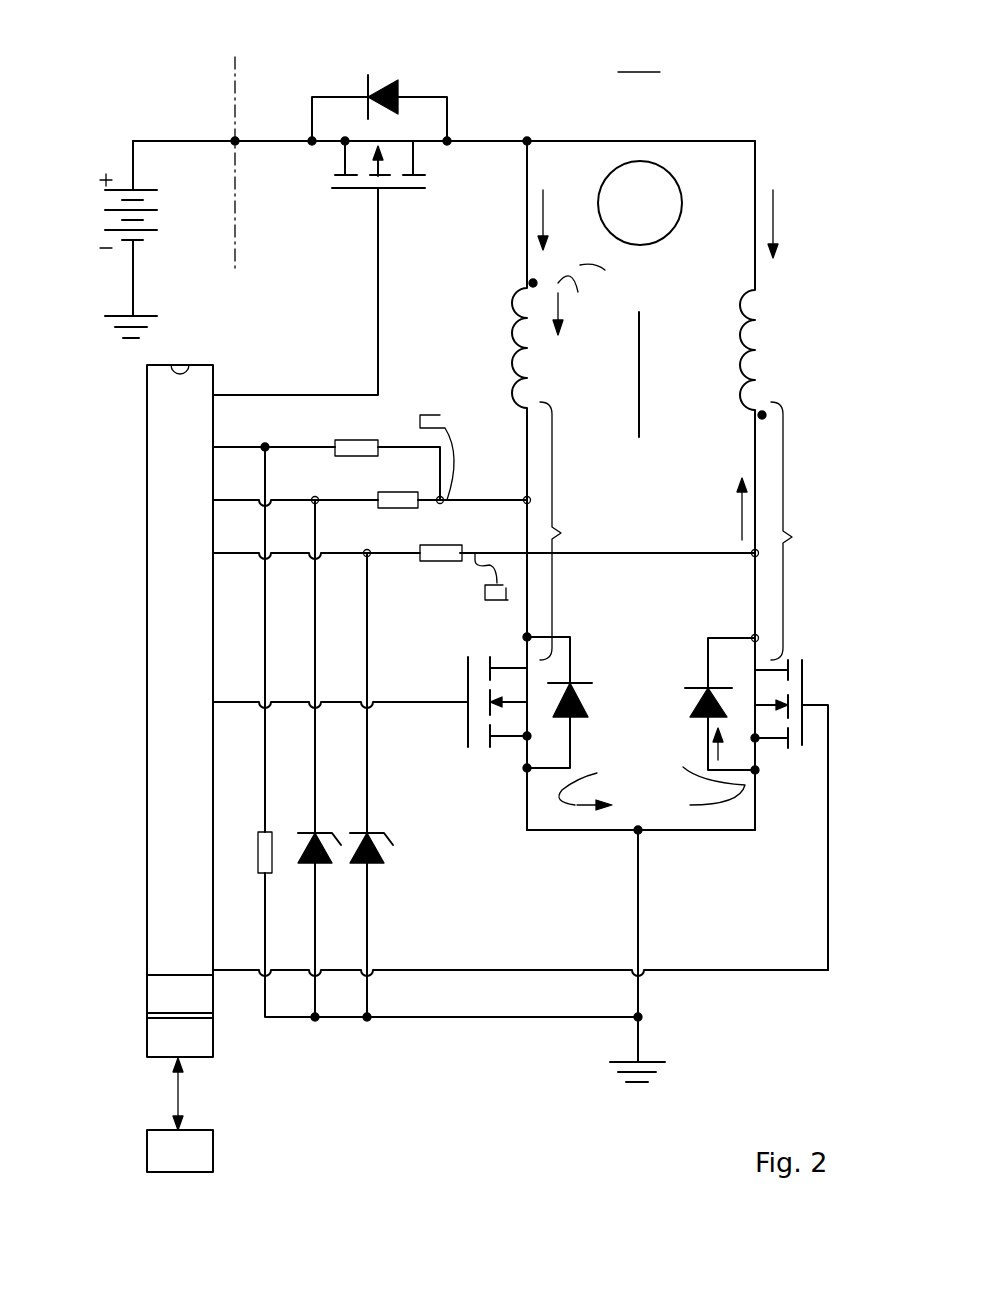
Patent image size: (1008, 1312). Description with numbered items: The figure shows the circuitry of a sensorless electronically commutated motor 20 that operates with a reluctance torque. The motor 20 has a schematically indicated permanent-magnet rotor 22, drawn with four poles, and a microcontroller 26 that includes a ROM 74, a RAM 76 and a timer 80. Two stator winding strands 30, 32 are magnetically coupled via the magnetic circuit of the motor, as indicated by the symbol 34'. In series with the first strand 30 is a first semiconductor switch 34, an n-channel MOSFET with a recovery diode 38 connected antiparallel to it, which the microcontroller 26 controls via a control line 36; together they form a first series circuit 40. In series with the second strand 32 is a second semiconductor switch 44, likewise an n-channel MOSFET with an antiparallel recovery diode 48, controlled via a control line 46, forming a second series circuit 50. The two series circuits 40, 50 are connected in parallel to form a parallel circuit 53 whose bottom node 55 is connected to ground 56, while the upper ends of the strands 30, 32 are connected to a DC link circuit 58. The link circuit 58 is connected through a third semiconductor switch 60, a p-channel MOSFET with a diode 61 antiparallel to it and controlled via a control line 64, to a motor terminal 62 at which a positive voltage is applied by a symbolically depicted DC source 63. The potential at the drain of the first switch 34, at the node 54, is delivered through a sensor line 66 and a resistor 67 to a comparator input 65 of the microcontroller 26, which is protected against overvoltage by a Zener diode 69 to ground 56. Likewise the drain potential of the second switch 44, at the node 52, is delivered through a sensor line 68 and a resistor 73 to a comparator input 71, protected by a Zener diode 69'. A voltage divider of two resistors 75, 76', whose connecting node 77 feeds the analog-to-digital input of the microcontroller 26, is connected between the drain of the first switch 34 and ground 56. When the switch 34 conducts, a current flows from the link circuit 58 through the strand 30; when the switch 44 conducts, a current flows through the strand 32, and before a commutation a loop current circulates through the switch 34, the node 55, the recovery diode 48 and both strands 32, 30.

The electronically commutated motor 20 is at (640, 56).
The permanent-magnet rotor 22 is at (660, 233).
The microcontroller 26 is at (196, 845).
The first stator winding strand 30 is at (527, 290).
The second stator winding strand 32 is at (768, 305).
The first semiconductor switch 34 is at (461, 725).
The magnetic coupling symbol 34' is at (634, 395).
The control line 36 is at (413, 703).
The recovery diode 38 is at (588, 708).
The first series circuit 40 is at (574, 531).
The second semiconductor switch 44 is at (808, 676).
The control line 46 is at (475, 970).
The recovery diode 48 is at (680, 707).
The second series circuit 50 is at (805, 531).
The node 52 is at (752, 560).
The parallel circuit 53 is at (658, 606).
The node 54 is at (527, 500).
The bottom node 55 is at (640, 833).
The ground 56 is at (133, 278).
The DC link circuit 58 is at (495, 140).
The third semiconductor switch 60 is at (353, 189).
The diode 61 is at (375, 78).
The motor terminal 62 is at (236, 140).
The DC source 63 is at (130, 188).
The control line 64 is at (378, 322).
The comparator input 65 is at (213, 500).
The sensor line 66 is at (482, 500).
The resistor 67 is at (393, 508).
The sensor line 68 is at (500, 553).
The Zener diode 69 is at (331, 889).
The Zener diode 69' is at (387, 889).
The comparator input 71 is at (213, 550).
The resistor 73 is at (432, 562).
The ROM 74 is at (147, 1040).
The resistor 75 is at (357, 440).
The RAM 76 is at (138, 1115).
The resistor 76' is at (289, 889).
The connecting node 77 is at (268, 450).
The timer 80 is at (147, 997).